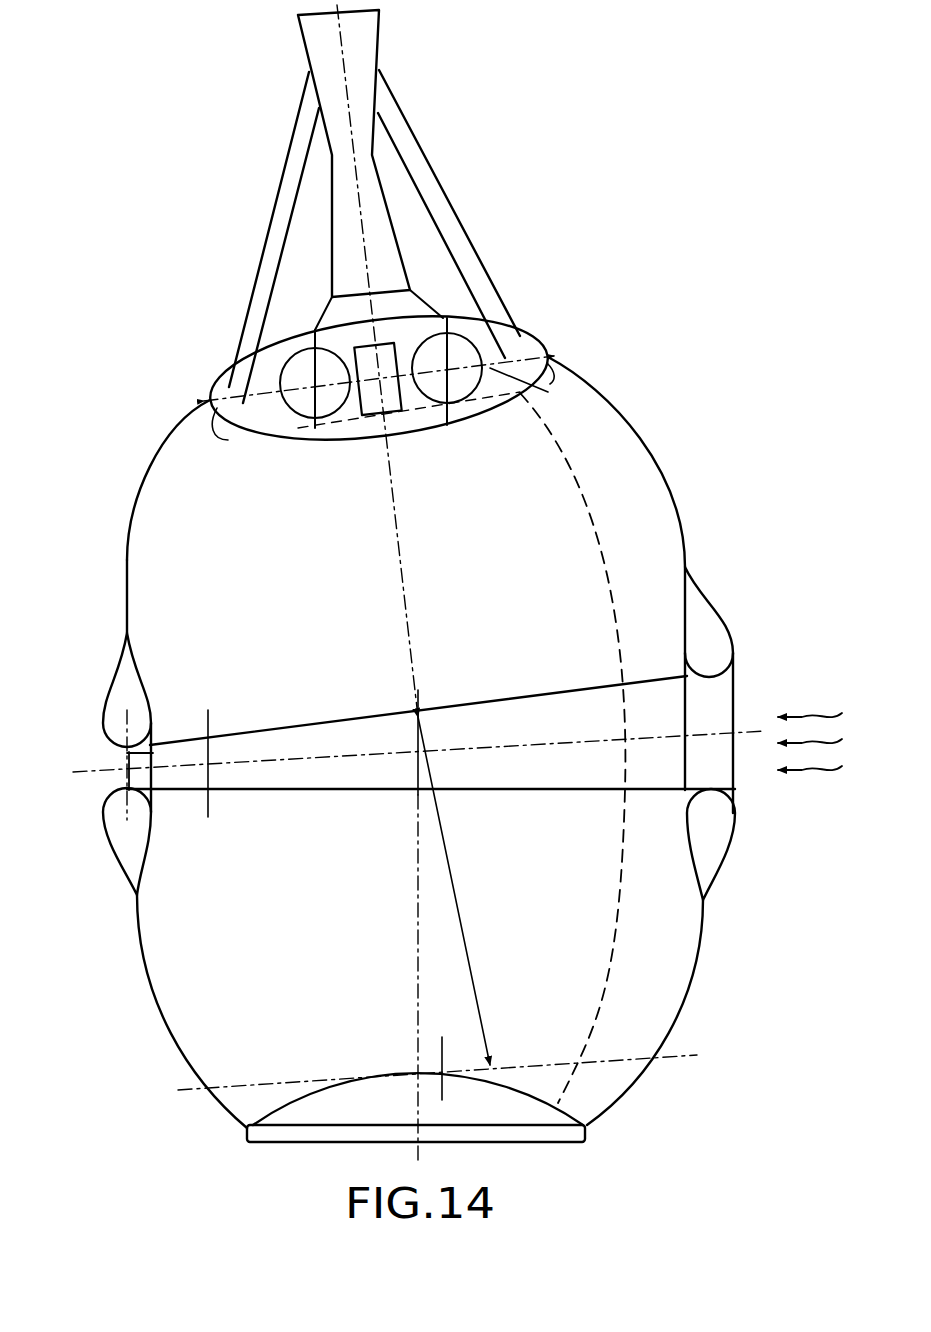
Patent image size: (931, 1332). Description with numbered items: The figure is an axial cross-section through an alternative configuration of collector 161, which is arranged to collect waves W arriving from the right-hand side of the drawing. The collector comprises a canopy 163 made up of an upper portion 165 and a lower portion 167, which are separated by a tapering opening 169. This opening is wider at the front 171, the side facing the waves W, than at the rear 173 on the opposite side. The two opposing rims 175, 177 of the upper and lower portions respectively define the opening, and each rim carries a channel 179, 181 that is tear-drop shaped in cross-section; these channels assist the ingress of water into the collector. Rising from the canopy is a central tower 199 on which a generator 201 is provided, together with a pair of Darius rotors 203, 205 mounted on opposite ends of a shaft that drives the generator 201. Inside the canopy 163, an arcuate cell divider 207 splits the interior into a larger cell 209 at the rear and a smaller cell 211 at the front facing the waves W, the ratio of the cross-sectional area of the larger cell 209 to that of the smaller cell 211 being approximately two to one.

The collector 161 is at (646, 375).
The canopy 163 is at (725, 496).
The upper portion 165 is at (124, 512).
The lower portion 167 is at (142, 962).
The tapering opening 169 is at (152, 752).
The front 171 is at (720, 703).
The rear 173 is at (120, 764).
The rim of upper portion 175 is at (545, 695).
The rim of lower portion 177 is at (543, 788).
The channel 179 is at (708, 628).
The channel 181 is at (720, 830).
The central tower 199 is at (480, 247).
The generator 201 is at (398, 412).
The Darius rotor 203 is at (307, 410).
The Darius rotor 205 is at (465, 390).
The arcuate cell divider 207 is at (615, 627).
The larger cell 209 is at (155, 588).
The smaller cell 211 is at (623, 492).
The waves W is at (824, 741).